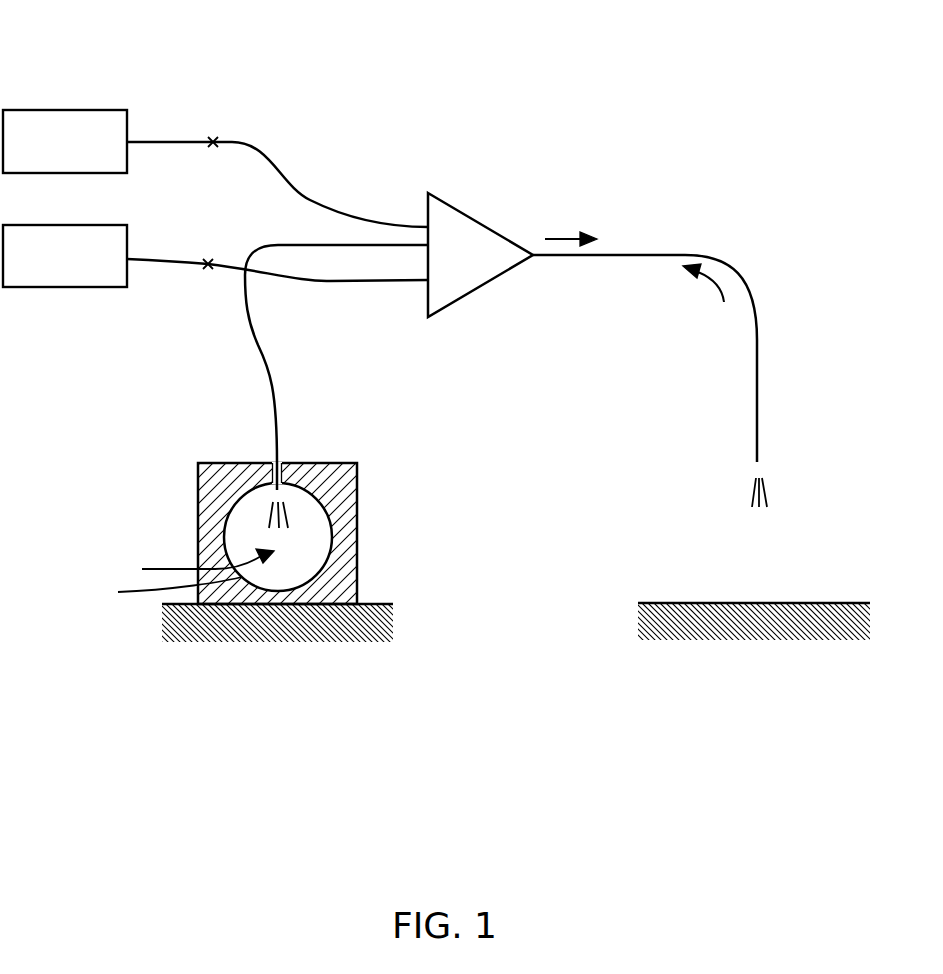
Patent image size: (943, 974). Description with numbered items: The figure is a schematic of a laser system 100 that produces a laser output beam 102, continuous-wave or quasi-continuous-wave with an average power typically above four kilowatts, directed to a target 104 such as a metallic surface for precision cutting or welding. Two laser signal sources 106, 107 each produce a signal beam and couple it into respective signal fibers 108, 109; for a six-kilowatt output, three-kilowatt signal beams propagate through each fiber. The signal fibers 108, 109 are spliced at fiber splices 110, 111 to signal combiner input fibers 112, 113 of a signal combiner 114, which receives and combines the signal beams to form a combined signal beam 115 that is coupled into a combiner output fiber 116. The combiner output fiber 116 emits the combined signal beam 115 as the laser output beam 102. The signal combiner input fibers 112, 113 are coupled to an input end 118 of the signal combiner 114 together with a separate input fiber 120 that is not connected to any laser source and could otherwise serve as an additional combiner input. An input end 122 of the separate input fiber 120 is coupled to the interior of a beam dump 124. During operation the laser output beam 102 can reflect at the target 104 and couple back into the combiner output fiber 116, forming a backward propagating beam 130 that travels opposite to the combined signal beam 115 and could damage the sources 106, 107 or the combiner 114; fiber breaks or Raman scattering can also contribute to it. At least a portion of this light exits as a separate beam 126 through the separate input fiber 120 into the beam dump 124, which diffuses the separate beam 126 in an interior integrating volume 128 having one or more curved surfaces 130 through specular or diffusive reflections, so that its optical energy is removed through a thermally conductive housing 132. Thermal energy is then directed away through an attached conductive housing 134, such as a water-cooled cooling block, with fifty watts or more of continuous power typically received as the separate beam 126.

The laser system 100 is at (727, 115).
The laser output beam 102 is at (767, 500).
The target 104 is at (750, 603).
The laser signal source 106 is at (65, 141).
The laser signal source 107 is at (65, 256).
The signal fiber 108 is at (160, 140).
The signal fiber 109 is at (147, 253).
The fiber splice 110 is at (216, 140).
The fiber splice 111 is at (210, 262).
The signal combiner input fiber 112 is at (307, 197).
The signal combiner input fiber 113 is at (292, 280).
The signal combiner 114 is at (480, 255).
The combined signal beam 115 is at (563, 230).
The combiner output fiber 116 is at (653, 250).
The input end 118 is at (408, 200).
The separate input fiber 120 is at (245, 307).
The input end 122 is at (278, 484).
The beam dump 124 is at (352, 497).
The separate beam 126 is at (267, 512).
The interior integrating volume 128 is at (189, 566).
The backward propagating beam 130 is at (713, 282).
The thermally conductive housing 132 is at (357, 543).
The conductive housing 134 is at (375, 604).